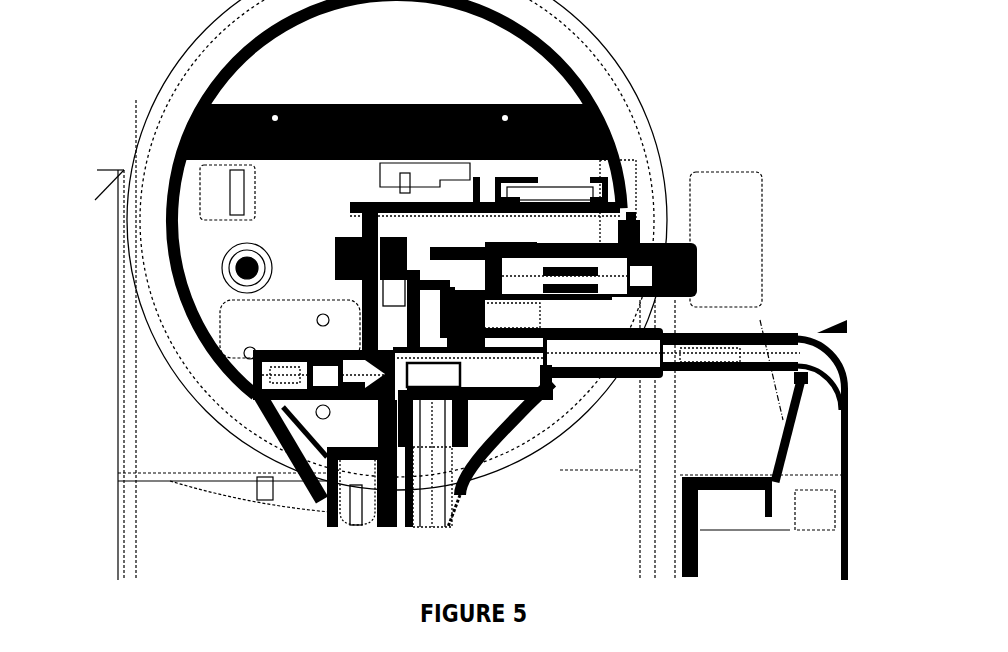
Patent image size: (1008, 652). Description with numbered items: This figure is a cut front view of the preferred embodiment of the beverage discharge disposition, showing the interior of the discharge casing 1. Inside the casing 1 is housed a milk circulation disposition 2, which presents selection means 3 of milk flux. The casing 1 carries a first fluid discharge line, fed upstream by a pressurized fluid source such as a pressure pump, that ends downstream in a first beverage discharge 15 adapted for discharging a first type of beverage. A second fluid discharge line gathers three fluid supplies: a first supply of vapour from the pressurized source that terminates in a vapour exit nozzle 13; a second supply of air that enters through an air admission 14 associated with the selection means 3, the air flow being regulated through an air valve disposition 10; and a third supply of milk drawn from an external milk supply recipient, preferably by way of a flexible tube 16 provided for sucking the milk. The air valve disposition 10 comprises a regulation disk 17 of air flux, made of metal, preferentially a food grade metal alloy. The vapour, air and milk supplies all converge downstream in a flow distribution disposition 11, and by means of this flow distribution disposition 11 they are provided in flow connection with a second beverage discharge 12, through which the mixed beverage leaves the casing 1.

The discharge casing 1 is at (197, 92).
The milk circulation disposition 2 is at (418, 228).
The selection means of milk flux 3 is at (690, 250).
The air valve disposition 10 is at (527, 238).
The flow distribution disposition 11 is at (432, 374).
The second beverage discharge 12 is at (450, 525).
The vapour exit nozzle 13 is at (347, 373).
The air admission 14 is at (630, 195).
The first beverage discharge 15 is at (340, 533).
The flexible tube 16 is at (798, 337).
The regulation disk 17 is at (480, 256).